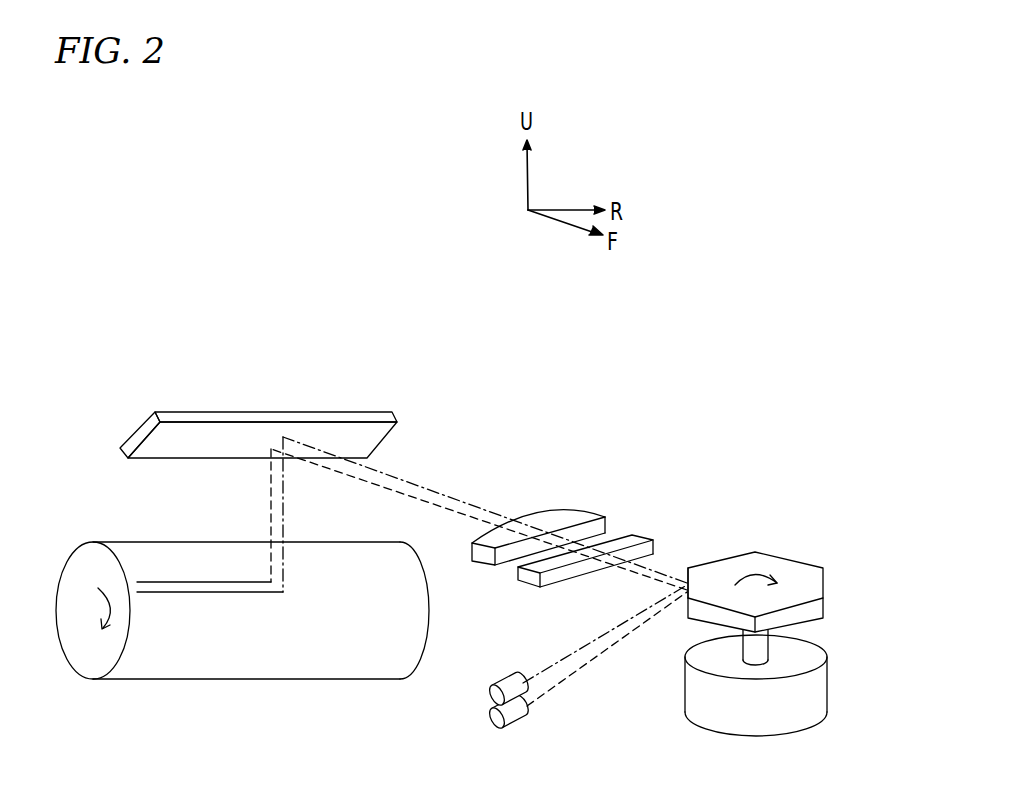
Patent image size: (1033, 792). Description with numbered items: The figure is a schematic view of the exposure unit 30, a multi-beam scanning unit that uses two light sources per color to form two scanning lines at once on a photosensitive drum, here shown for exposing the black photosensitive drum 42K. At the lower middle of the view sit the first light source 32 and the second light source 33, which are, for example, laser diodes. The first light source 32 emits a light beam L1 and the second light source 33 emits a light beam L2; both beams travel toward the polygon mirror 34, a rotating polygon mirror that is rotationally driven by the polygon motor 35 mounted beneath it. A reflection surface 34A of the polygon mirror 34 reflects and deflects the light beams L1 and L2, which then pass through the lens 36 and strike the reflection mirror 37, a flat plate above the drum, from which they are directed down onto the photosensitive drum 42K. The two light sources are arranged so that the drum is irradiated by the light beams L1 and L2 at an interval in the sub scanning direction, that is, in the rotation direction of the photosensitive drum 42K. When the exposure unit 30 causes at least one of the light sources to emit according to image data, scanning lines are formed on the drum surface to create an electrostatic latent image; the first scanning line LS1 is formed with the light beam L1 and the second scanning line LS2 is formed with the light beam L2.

The exposure unit 30 is at (472, 378).
The first light source 32 is at (491, 700).
The second light source 33 is at (496, 722).
The polygon mirror 34 is at (753, 554).
The reflection surface 34A is at (687, 580).
The polygon motor 35 is at (827, 682).
The lens 36 is at (632, 535).
The reflection mirror 37 is at (268, 410).
The photosensitive drum 42K is at (238, 681).
The light beam L1 is at (565, 657).
The light beam L2 is at (577, 672).
The first scanning line LS1 is at (192, 594).
The second scanning line LS2 is at (187, 581).